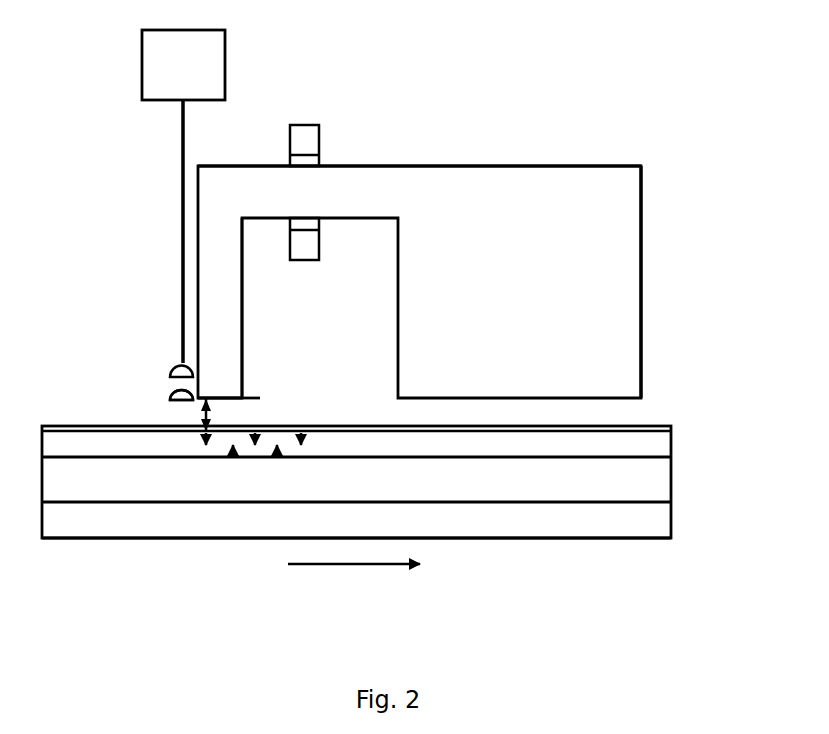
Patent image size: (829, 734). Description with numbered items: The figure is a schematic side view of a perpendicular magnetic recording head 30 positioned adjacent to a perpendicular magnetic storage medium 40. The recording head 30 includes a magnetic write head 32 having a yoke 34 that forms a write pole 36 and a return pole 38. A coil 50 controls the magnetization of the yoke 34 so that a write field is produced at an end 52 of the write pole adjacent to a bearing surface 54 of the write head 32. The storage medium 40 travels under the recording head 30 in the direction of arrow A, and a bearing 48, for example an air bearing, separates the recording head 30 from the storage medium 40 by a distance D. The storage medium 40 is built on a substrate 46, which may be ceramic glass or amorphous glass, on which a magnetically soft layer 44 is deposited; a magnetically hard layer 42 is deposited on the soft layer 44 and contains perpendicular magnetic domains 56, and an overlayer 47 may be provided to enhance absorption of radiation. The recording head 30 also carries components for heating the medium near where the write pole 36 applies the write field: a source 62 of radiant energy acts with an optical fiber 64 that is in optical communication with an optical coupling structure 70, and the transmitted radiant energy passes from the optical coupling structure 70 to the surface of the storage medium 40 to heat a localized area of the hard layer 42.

The perpendicular magnetic recording head 30 is at (700, 182).
The magnetic write head 32 is at (478, 132).
The yoke 34 is at (393, 172).
The write pole 36 is at (234, 313).
The return pole 38 is at (641, 306).
The perpendicular magnetic storage medium 40 is at (603, 553).
The magnetically hard layer 42 is at (671, 442).
The magnetically soft layer 44 is at (671, 478).
The substrate 46 is at (671, 518).
The overlayer 47 is at (657, 424).
The bearing 48 is at (160, 410).
The coil 50 is at (319, 130).
The end of the write pole 52 is at (218, 395).
The bearing surface 54 is at (238, 400).
The perpendicular magnetic domains 56 is at (235, 445).
The source of radiant energy 62 is at (225, 64).
The optical fiber 64 is at (183, 133).
The optical coupling structure 70 is at (163, 383).
The distance D is at (203, 406).
The direction of travel arrow A is at (318, 566).